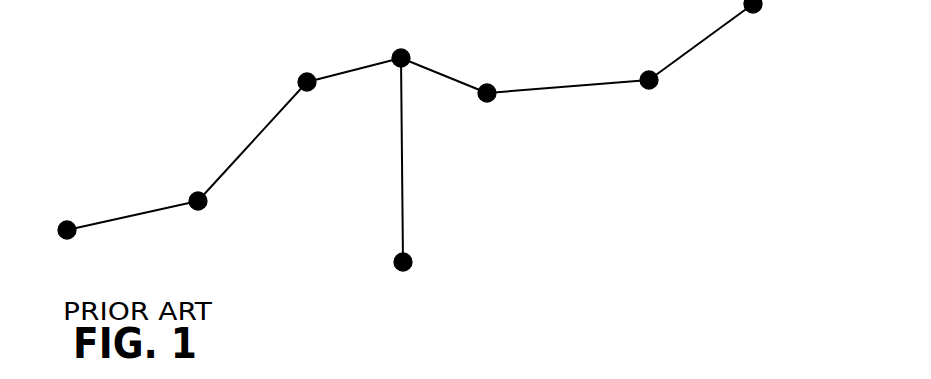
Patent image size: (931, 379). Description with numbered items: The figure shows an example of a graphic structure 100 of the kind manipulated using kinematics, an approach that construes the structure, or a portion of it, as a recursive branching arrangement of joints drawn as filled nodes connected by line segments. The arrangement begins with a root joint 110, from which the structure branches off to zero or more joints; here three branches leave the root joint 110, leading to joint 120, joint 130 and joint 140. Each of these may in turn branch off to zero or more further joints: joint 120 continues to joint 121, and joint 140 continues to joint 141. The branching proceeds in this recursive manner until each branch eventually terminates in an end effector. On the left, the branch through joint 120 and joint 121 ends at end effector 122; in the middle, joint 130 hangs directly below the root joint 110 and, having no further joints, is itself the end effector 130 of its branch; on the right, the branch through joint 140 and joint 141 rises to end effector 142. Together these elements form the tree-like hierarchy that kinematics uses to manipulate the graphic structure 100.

The graphic structure 100 is at (120, 82).
The root joint 110 is at (402, 39).
The joint 120 is at (317, 100).
The joint 121 is at (203, 219).
The end effector 122 is at (63, 248).
The joint / end effector 130 is at (401, 279).
The joint 140 is at (488, 110).
The joint 141 is at (648, 97).
The end effector 142 is at (768, 23).